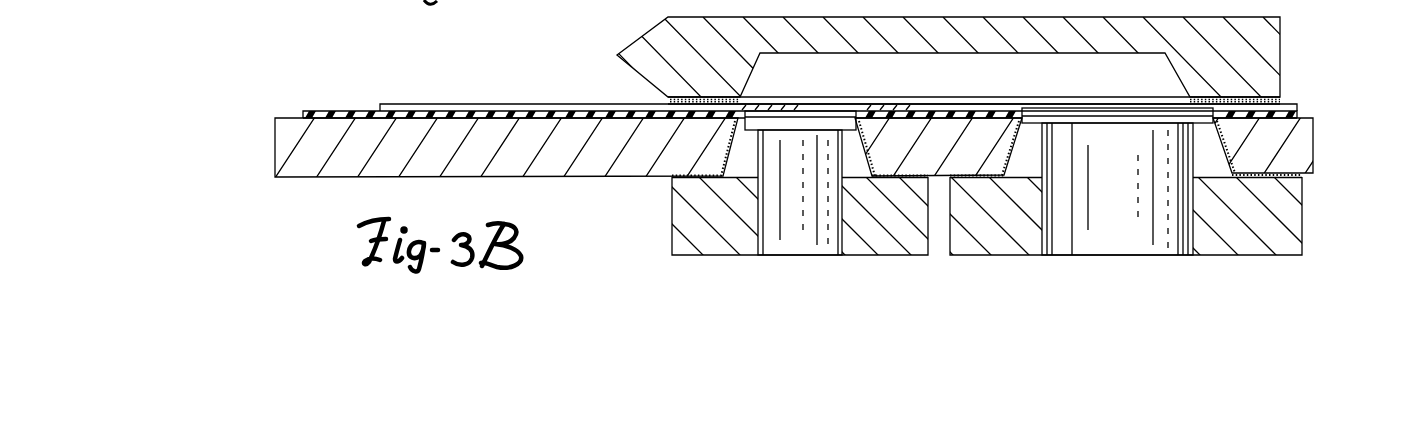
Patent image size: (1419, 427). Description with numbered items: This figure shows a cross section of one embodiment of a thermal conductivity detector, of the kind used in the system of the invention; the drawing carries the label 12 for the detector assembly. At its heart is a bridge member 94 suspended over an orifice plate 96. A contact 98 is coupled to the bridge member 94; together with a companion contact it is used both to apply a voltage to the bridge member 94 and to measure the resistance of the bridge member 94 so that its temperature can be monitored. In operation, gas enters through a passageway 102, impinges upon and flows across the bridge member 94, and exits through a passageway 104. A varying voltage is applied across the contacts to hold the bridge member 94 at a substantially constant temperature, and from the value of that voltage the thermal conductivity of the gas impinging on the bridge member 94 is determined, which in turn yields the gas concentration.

The upper housing block 12 is at (1320, 63).
The bridge member 94 is at (797, 105).
The orifice plate 96 is at (493, 111).
The contact 98 is at (405, 104).
The passageway 102 is at (783, 256).
The passageway 104 is at (1105, 245).